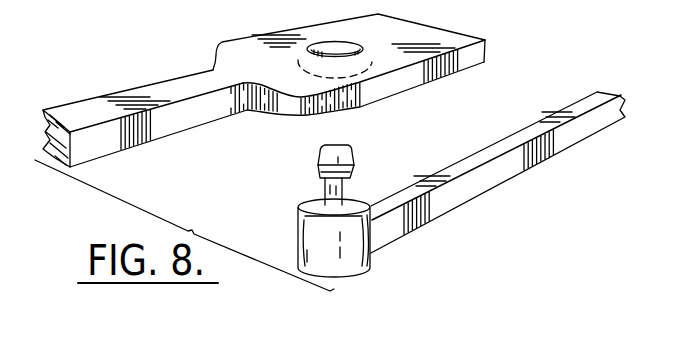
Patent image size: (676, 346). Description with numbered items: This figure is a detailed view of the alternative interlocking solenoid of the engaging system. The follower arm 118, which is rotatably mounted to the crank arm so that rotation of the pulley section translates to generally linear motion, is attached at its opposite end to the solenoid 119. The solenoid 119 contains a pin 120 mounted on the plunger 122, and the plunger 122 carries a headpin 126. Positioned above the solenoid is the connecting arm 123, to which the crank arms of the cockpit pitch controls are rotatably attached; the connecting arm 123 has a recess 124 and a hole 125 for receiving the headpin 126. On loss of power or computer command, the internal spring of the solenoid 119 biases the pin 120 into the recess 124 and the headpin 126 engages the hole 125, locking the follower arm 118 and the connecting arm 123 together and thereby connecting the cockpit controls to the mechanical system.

The follower arm 118 is at (450, 212).
The solenoid 119 is at (343, 277).
The pin 120 is at (352, 158).
The plunger 122 is at (355, 185).
The connecting arm 123 is at (102, 96).
The recess 124 is at (316, 75).
The hole 125 is at (352, 44).
The headpin 126 is at (318, 172).